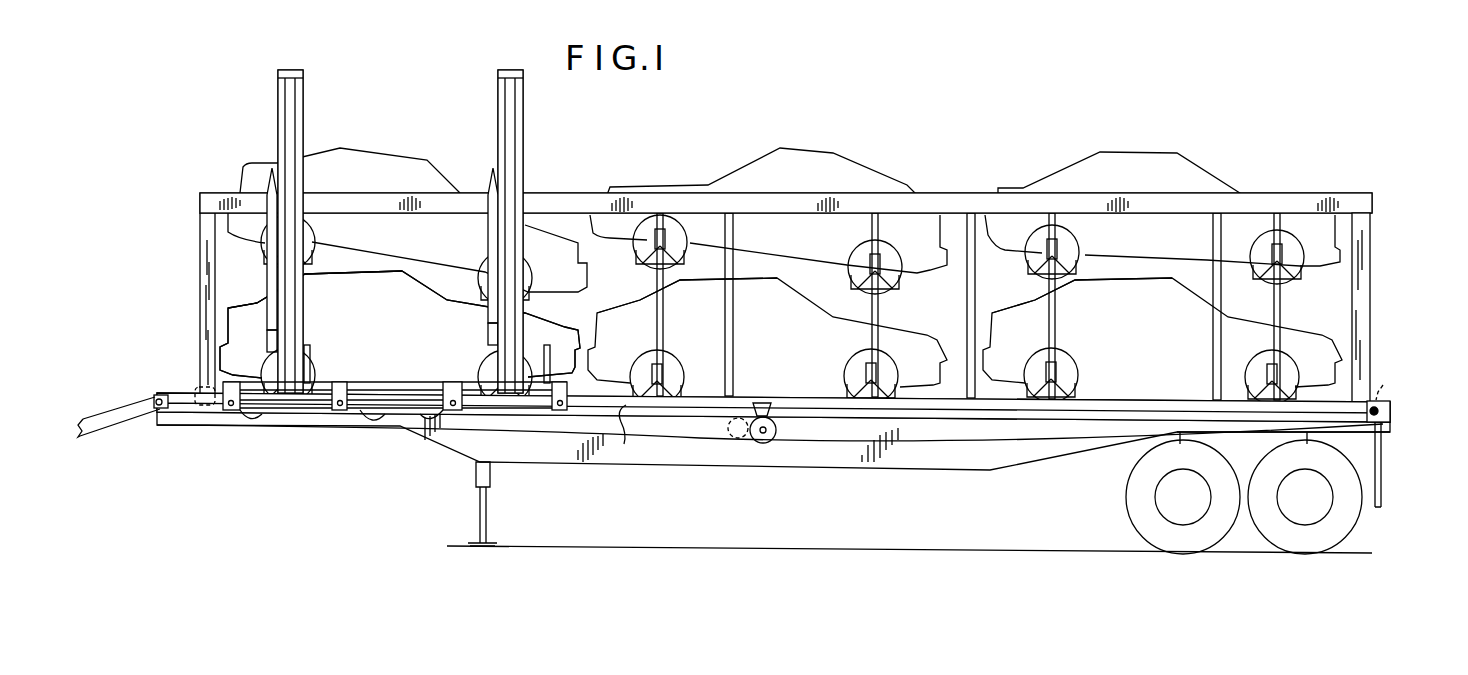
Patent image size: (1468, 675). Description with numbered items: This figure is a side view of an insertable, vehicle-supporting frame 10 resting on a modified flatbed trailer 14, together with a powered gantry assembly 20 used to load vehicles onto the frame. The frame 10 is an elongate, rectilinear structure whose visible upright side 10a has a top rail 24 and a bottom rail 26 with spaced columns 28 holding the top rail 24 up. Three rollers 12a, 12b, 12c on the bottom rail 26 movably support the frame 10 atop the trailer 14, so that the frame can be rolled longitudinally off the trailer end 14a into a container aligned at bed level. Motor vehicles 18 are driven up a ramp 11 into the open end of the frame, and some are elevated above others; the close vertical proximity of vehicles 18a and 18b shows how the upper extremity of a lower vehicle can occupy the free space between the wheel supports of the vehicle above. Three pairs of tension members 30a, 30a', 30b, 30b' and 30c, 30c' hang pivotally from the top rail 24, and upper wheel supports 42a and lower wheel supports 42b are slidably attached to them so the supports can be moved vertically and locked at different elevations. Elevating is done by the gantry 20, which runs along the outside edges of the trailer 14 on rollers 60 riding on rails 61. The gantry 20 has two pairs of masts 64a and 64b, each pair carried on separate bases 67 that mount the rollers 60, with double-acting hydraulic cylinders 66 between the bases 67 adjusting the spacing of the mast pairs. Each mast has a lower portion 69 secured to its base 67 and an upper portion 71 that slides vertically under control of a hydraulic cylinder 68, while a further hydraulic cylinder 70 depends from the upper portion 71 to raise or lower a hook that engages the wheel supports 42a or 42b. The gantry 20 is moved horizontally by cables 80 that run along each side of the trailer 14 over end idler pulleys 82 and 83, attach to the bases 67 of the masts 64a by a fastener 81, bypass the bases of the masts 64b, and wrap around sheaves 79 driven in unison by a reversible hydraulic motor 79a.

The vehicle-supporting frame 10 is at (1316, 186).
The upright side 10a is at (1371, 302).
The ramp 11 is at (110, 428).
The roller 12a is at (1386, 384).
The roller 12b is at (766, 398).
The roller 12c is at (193, 386).
The flatbed trailer 14 is at (607, 471).
The trailer end 14a is at (1390, 432).
The motor vehicle 18 is at (1000, 172).
The vehicle 18a is at (262, 239).
The vehicle 18b is at (222, 320).
The gantry assembly 20 is at (252, 92).
The top rail 24 is at (572, 192).
The bottom rail 26 is at (1132, 395).
The column 28 is at (484, 352).
The tension member 30a is at (1162, 332).
The tension member 30a' is at (1082, 295).
The tension member 30b is at (767, 332).
The tension member 30b' is at (687, 295).
The tension member 30c is at (400, 324).
The tension member 30c' is at (315, 295).
The upper wheel support 42a is at (312, 240).
The lower wheel support 42b is at (838, 372).
The roller 60 is at (300, 414).
The rail 61 is at (770, 434).
The mast 64a is at (290, 70).
The mast 64b is at (516, 70).
The hydraulic cylinder 66 is at (392, 382).
The base 67 is at (307, 372).
The hydraulic cylinder 68 is at (488, 245).
The lower portion 69 is at (278, 350).
The hydraulic cylinder 70 is at (303, 135).
The upper portion 71 is at (278, 132).
The sheave 79 is at (778, 421).
The hydraulic motor 79a is at (738, 418).
The cable 80 is at (390, 420).
The fastener 81 is at (341, 382).
The idler pulley 82 is at (1391, 404).
The idler pulley 83 is at (158, 395).